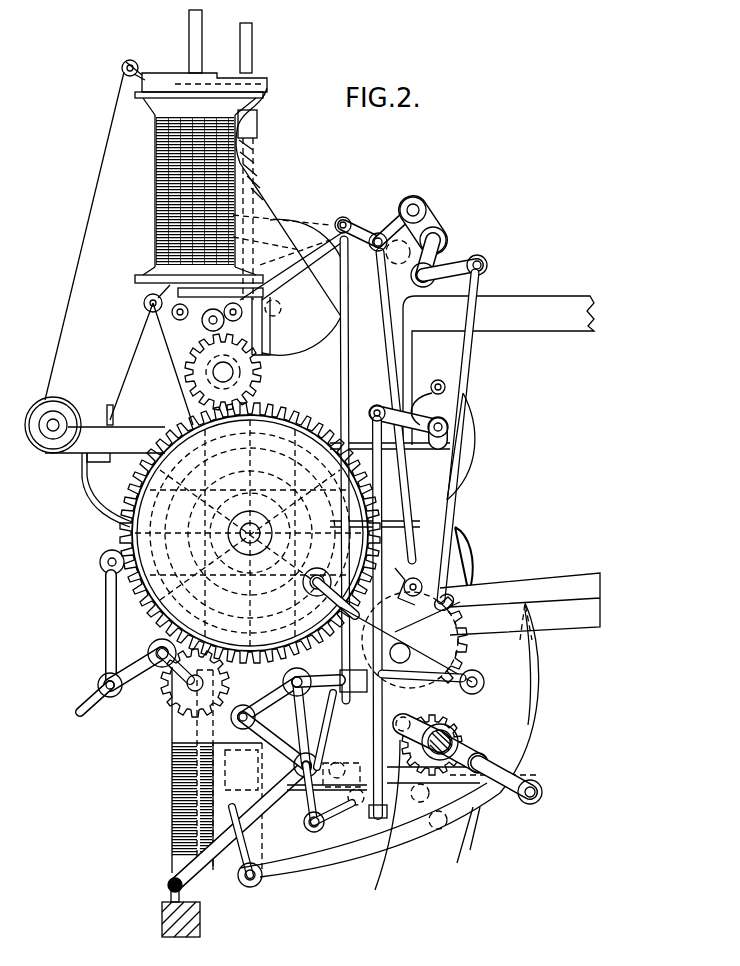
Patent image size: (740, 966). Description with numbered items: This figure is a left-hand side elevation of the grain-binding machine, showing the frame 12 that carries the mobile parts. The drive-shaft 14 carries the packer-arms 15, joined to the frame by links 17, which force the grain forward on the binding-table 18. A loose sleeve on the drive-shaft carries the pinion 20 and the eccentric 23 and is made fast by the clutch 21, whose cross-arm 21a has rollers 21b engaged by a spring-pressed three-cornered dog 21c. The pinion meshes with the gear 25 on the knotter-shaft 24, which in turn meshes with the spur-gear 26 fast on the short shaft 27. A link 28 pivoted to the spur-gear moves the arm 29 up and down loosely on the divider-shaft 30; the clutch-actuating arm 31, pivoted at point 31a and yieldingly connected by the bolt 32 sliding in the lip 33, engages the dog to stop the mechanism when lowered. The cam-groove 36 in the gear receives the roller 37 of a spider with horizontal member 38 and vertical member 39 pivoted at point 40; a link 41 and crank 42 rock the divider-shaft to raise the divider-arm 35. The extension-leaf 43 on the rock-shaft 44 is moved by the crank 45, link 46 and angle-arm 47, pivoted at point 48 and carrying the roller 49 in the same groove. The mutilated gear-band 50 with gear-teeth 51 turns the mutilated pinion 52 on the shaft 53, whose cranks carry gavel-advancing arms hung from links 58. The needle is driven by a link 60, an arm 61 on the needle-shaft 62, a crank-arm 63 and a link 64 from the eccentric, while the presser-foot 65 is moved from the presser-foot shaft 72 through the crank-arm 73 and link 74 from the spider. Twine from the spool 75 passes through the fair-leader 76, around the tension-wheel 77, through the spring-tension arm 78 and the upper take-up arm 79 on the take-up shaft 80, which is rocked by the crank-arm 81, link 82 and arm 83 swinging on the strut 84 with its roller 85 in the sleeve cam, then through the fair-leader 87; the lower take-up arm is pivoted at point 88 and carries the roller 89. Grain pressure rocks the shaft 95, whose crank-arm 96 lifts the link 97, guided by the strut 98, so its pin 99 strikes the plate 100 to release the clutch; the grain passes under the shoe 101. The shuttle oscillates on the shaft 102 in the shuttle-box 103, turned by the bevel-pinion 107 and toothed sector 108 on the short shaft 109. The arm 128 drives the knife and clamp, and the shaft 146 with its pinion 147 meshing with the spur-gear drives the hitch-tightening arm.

The frame 12 is at (242, 654).
The drive-shaft 14 is at (470, 752).
The packer-arms 15 is at (472, 548).
The links 17 is at (250, 832).
The binding-table 18 is at (555, 582).
The pinion 20 is at (420, 809).
The clutch 21 is at (485, 735).
The cross-arm 21a is at (468, 745).
The rollers 21b is at (488, 768).
The three-cornered dog 21c is at (520, 700).
The eccentric 23 is at (386, 824).
The knotter-shaft 24 is at (560, 565).
The gear 25 is at (466, 650).
The spur-gear 26 is at (305, 520).
The short revoluble shaft 27 is at (275, 540).
The link 28 is at (440, 625).
The arm 29 is at (422, 680).
The divider or gavel-forming shaft 30 is at (222, 688).
The clutch-actuating arm 31 is at (463, 628).
The pivot point 31a is at (255, 722).
The bolt 32 is at (345, 670).
The lip 33 is at (350, 762).
The divider-arm 35 is at (540, 672).
The cam-groove 36 is at (112, 525).
The roller 37 is at (268, 595).
The horizontal member 38 is at (408, 578).
The vertical member 39 is at (326, 730).
The pivot 40 is at (322, 572).
The link 41 is at (290, 758).
The crank 42 is at (272, 700).
The extension-leaf 43 is at (97, 702).
The rock-shaft 44 is at (160, 667).
The crank 45 is at (148, 660).
The link 46 is at (104, 622).
The angle-arm 47 is at (100, 556).
The pivot point 48 is at (248, 612).
The antifriction-roller 49 is at (120, 615).
The mutilated gear-band 50 is at (128, 498).
The gear-teeth 51 is at (310, 410).
The mutilated pinion 52 is at (195, 372).
The shaft 53 is at (215, 375).
The links 58 is at (327, 280).
The link 60 is at (180, 325).
The arm 61 is at (310, 252).
The needle-shaft 62 is at (432, 268).
The crank-arm 63 is at (480, 258).
The link 64 is at (470, 362).
The presser-foot 65 is at (105, 588).
The presser-foot shaft 72 is at (443, 232).
The crank-arm 73 is at (425, 203).
The link 74 is at (410, 500).
The spool 75 is at (156, 182).
The fair-leader 76 is at (148, 77).
The tension-wheel 77 is at (68, 416).
The spring-tension arm 78 is at (108, 404).
The upper take-up arm 79 is at (144, 303).
The take-up shaft 80 is at (416, 298).
The crank-arm 81 is at (378, 233).
The link 82 is at (342, 280).
The arm 83 is at (532, 803).
The strut 84 is at (530, 782).
The antifriction-roller 85 is at (455, 835).
The fair-leader 87 is at (195, 470).
The pivot point 88 is at (271, 335).
The antifriction-roller 89 is at (230, 452).
The shaft 95 is at (450, 427).
The crank-arm 96 is at (420, 422).
The link 97 is at (375, 455).
The strut 98 is at (378, 820).
The pin 99 is at (324, 822).
The plate 100 is at (340, 830).
The shoe 101 is at (478, 462).
The shaft 102 is at (172, 800).
The shuttle-box 103 is at (172, 838).
The bevel-pinion 107 is at (240, 875).
The toothed sector 108 is at (340, 778).
The short shaft 109 is at (285, 835).
The arm 128 is at (332, 600).
The shaft 146 is at (190, 690).
The pinion 147 is at (176, 680).